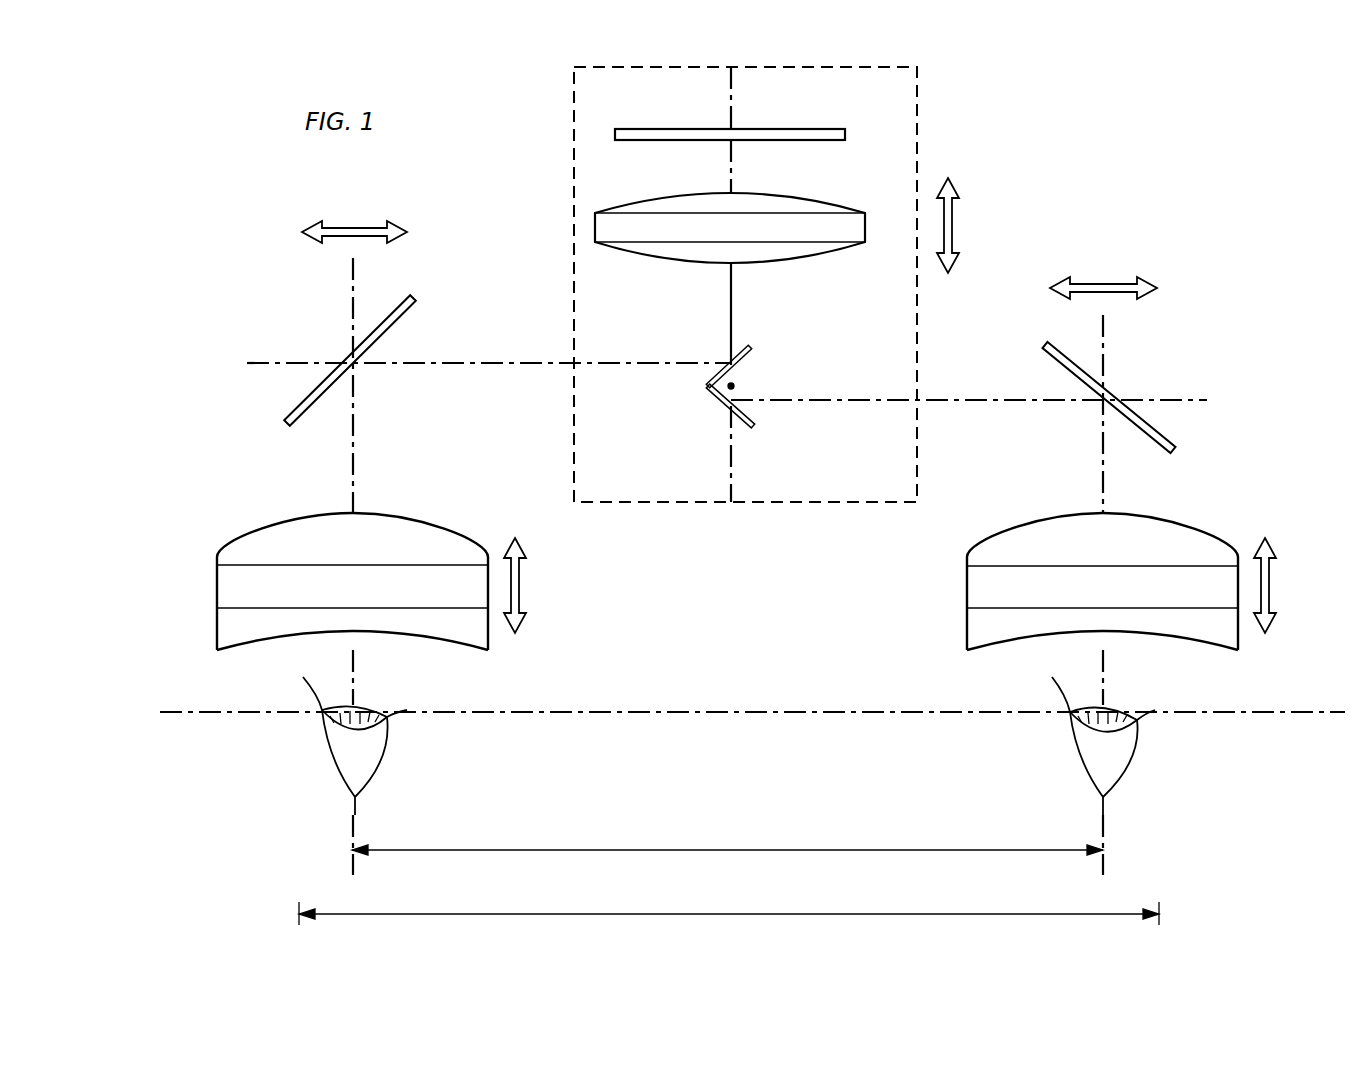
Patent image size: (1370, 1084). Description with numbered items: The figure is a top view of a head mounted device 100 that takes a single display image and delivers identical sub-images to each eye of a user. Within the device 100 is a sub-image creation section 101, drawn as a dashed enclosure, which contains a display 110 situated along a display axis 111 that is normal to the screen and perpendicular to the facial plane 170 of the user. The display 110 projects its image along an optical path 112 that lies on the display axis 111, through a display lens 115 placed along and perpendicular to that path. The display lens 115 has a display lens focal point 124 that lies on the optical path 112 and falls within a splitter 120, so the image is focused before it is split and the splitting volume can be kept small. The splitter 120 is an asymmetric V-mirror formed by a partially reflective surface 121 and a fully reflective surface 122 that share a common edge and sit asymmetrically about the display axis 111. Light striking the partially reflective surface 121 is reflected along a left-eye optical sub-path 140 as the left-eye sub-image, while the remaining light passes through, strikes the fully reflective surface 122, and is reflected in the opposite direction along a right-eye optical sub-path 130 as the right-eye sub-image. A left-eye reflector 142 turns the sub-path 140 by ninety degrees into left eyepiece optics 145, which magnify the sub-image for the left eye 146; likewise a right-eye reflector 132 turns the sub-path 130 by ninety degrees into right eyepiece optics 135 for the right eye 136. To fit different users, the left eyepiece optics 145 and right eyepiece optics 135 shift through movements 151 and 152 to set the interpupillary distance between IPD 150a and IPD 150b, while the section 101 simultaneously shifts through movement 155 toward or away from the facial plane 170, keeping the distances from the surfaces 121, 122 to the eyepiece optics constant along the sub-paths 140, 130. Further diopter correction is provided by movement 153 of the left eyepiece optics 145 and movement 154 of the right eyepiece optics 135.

The head mounted device 100 is at (1212, 178).
The sub-image creation section 101 is at (918, 113).
The display 110 is at (766, 129).
The display axis 111 is at (729, 118).
The optical path 112 is at (729, 185).
The display lens 115 is at (832, 202).
The splitter 120 is at (770, 399).
The partially reflective surface 121 is at (755, 351).
The fully reflective surface 122 is at (753, 432).
The display lens focal point 124 is at (735, 385).
The right-eye optical sub-path 130 is at (860, 398).
The right-eye reflector 132 is at (1160, 420).
The right eyepiece optics 135 is at (1176, 520).
The right eye 136 is at (1137, 772).
The left-eye optical sub-path 140 is at (504, 360).
The left-eye reflector 142 is at (304, 388).
The left eyepiece optics 145 is at (326, 512).
The left eye 146 is at (332, 760).
The IPD 150a is at (729, 848).
The IPD 150b is at (729, 912).
The movement 151 is at (352, 226).
The movement 152 is at (1108, 282).
The movement 153 is at (520, 586).
The movement 154 is at (1272, 586).
The movement 155 is at (956, 225).
The facial plane 170 is at (731, 710).